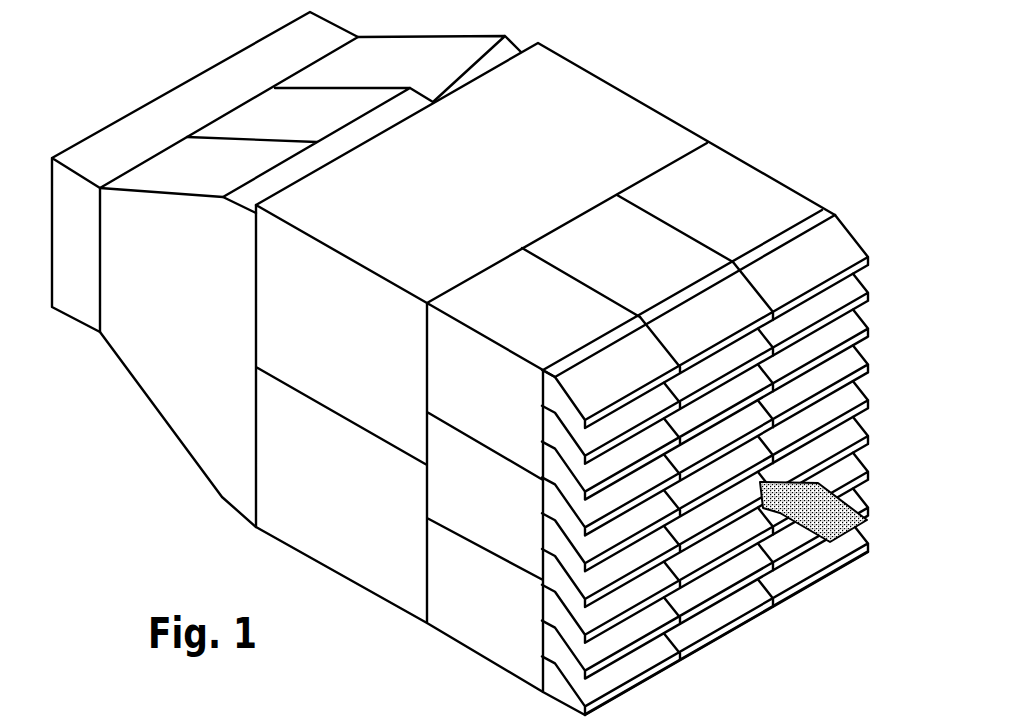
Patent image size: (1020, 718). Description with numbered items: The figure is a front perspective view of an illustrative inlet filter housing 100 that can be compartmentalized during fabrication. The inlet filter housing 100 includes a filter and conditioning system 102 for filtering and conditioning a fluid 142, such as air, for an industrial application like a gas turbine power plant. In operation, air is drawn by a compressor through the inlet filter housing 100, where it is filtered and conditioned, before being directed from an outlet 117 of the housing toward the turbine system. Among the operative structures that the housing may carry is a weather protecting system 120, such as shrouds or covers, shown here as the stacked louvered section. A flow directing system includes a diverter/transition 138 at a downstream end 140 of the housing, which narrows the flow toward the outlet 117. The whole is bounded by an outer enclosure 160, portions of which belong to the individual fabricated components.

The inlet filter housing 100 is at (786, 147).
The filter and conditioning system 102 is at (362, 556).
The outlet 117 is at (73, 293).
The weather protecting system 120 is at (820, 265).
The diverter/transition 138 is at (180, 170).
The downstream end 140 is at (178, 287).
The fluid 142 is at (827, 483).
The outer enclosure 160 is at (628, 133).